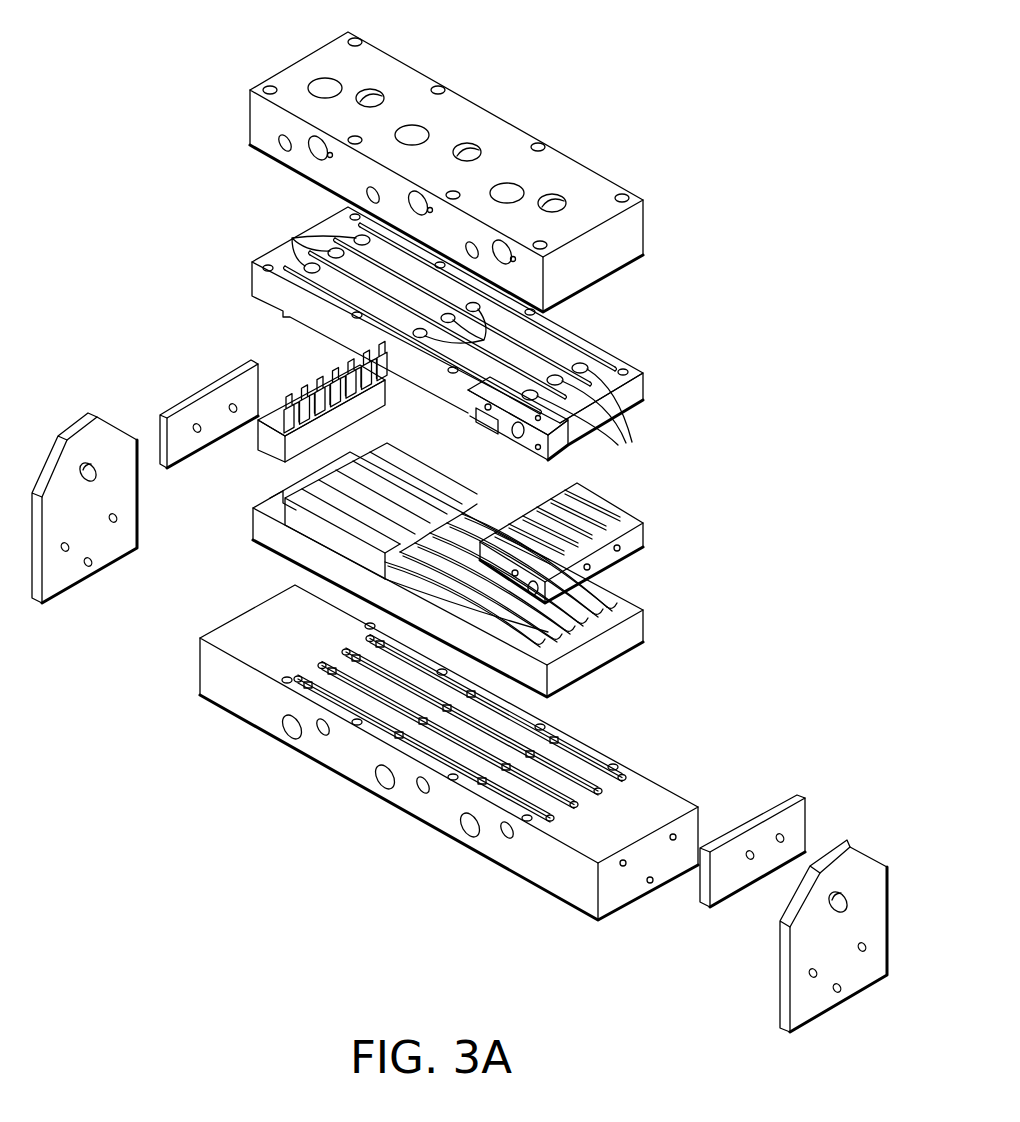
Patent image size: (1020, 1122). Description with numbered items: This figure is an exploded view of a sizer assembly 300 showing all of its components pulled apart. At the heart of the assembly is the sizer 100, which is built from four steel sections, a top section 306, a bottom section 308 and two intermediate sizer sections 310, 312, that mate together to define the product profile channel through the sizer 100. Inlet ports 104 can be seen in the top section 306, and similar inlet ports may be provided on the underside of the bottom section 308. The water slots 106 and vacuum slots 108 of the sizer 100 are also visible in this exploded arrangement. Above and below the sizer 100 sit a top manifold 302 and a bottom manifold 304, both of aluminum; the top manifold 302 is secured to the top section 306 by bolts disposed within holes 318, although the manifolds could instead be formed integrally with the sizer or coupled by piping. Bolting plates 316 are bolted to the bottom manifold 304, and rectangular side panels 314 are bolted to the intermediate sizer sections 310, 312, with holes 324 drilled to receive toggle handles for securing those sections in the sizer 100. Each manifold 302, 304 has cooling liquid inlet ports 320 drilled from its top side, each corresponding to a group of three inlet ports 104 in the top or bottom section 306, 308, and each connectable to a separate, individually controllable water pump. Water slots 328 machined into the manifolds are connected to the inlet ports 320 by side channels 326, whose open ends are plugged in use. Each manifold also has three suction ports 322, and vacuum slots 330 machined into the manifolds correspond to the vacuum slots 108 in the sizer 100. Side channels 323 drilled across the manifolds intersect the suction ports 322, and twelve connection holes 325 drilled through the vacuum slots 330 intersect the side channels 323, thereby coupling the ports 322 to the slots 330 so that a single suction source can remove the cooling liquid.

The sizer 100 is at (712, 373).
The inlet ports 104 is at (292, 238).
The water slots 106 is at (365, 448).
The vacuum slots 108 is at (392, 472).
The sizer assembly 300 is at (265, 874).
The top manifold 302 is at (628, 233).
The bottom manifold 304 is at (582, 905).
The top section 306 is at (612, 370).
The bottom section 308 is at (605, 665).
The intermediate sizer section 310 is at (632, 546).
The intermediate sizer section 312 is at (268, 444).
The rectangular side panels 314 is at (222, 400).
The bolting plates 316 is at (118, 440).
The holes 318 is at (362, 42).
The cooling liquid inlet ports 320 is at (325, 90).
The suction ports 322 is at (374, 100).
The side channels 323 is at (316, 160).
The holes 324 is at (86, 463).
The connection holes 325 is at (331, 156).
The side channels 326 is at (283, 151).
The water slots 328 is at (520, 808).
The vacuum slots 330 is at (548, 826).